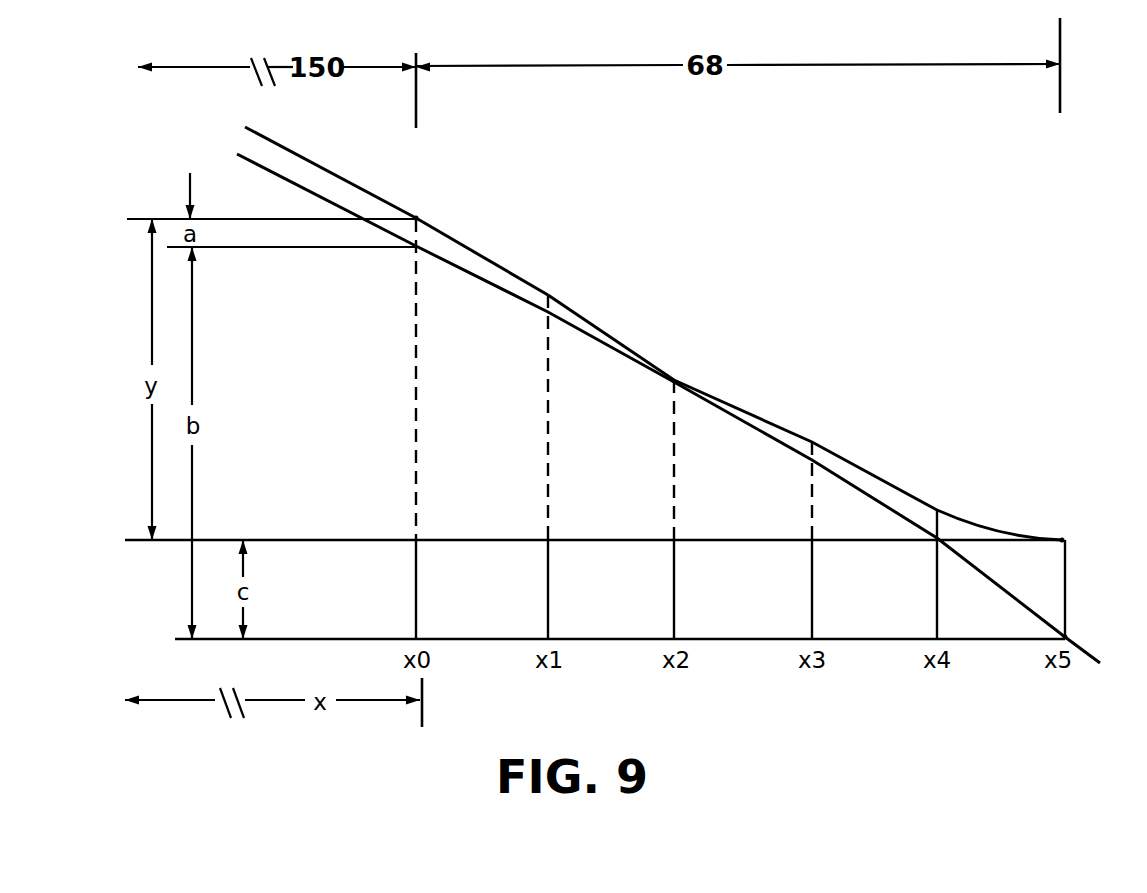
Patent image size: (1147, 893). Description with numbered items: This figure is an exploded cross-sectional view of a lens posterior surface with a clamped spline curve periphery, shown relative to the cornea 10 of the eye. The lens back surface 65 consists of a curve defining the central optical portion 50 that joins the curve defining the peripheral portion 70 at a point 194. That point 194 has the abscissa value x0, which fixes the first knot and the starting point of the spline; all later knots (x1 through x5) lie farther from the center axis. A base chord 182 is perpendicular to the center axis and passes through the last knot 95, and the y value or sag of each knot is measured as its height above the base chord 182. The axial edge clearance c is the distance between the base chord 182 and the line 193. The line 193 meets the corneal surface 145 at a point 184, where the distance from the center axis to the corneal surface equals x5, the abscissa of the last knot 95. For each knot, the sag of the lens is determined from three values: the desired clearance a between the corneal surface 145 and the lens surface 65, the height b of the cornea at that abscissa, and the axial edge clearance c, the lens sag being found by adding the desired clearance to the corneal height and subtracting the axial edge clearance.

The cornea 10 is at (489, 368).
The central optical portion 50 is at (370, 185).
The lens back surface 65 is at (893, 492).
The peripheral portion 70 is at (494, 254).
The last knot 95 is at (1064, 536).
The corneal surface 145 is at (308, 190).
The base chord 182 is at (607, 537).
The intersection point 184 is at (1072, 625).
The line 193 is at (870, 641).
The junction point 194 is at (413, 217).